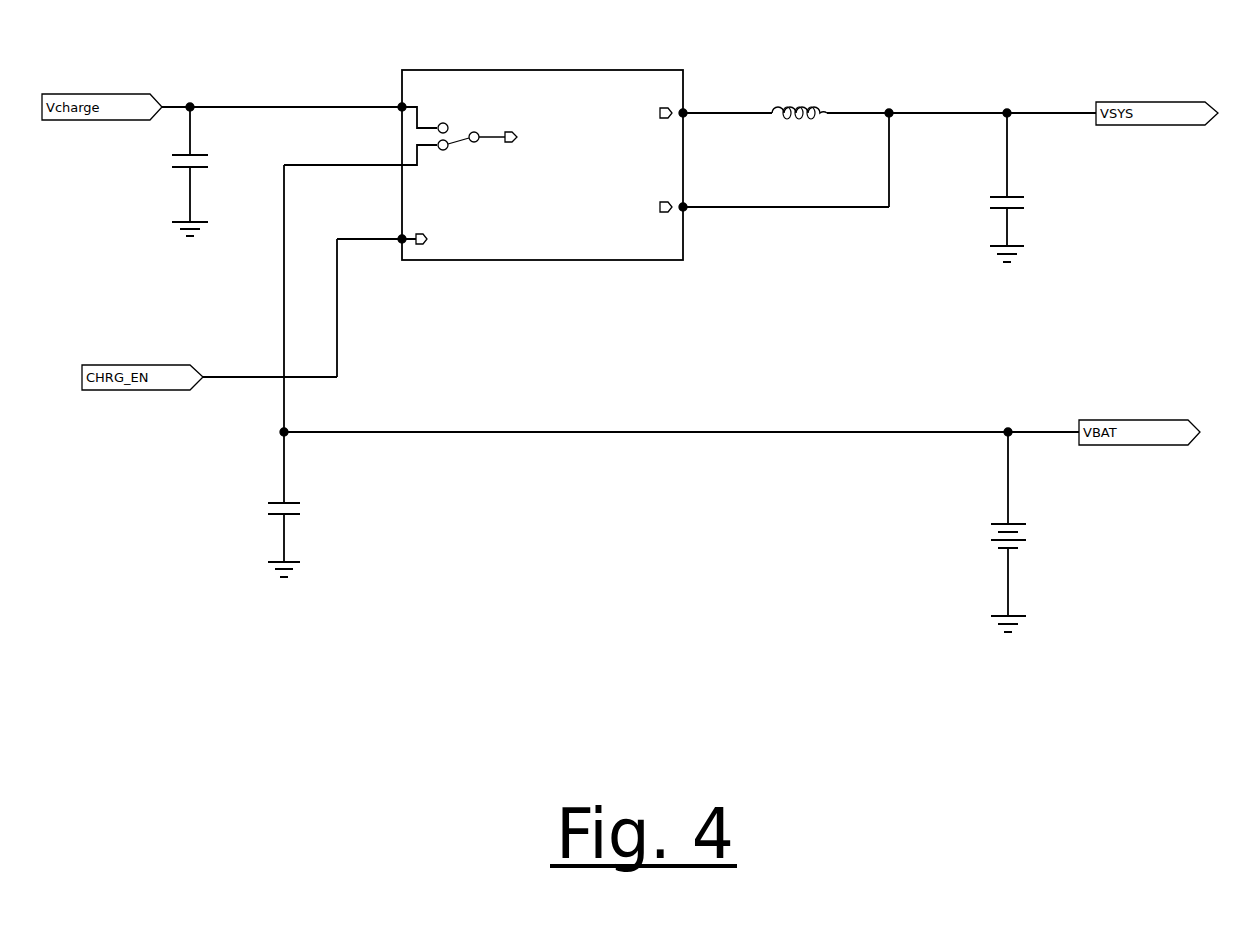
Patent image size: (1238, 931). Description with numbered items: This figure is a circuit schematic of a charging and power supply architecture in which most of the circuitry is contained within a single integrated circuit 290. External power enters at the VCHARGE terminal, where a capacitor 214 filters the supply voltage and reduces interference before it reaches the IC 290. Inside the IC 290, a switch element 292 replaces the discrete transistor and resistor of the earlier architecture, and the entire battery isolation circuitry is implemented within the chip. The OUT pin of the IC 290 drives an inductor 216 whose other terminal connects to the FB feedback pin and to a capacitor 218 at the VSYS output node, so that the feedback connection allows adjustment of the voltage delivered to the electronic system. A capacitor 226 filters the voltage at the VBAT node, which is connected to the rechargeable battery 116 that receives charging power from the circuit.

The battery 116 is at (1003, 520).
The capacitor 214 is at (200, 170).
The inductor 216 is at (828, 108).
The capacitor 218 is at (1014, 197).
The capacitor 226 is at (282, 497).
The integrated circuit 290 is at (519, 70).
The switch element 292 is at (433, 126).